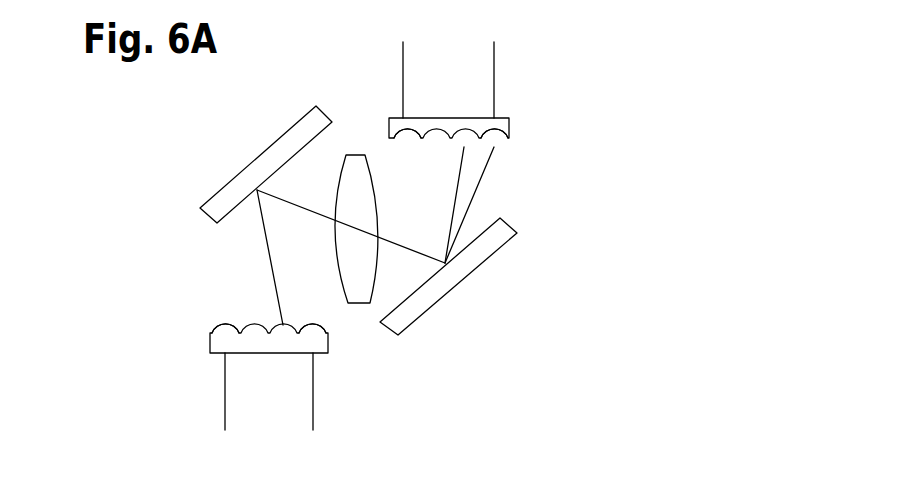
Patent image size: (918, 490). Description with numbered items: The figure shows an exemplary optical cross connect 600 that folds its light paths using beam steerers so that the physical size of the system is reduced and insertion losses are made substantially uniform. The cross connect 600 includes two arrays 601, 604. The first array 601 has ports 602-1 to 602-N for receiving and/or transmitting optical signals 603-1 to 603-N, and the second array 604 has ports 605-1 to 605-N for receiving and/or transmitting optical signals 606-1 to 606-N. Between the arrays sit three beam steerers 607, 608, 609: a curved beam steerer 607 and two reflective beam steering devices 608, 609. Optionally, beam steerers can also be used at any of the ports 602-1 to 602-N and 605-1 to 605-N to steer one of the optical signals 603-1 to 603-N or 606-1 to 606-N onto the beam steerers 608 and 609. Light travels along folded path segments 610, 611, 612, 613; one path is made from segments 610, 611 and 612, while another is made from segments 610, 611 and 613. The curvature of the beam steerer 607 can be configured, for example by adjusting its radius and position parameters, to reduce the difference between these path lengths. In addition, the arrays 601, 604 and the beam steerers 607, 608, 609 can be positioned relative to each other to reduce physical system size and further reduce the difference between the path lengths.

The cross connect 600 is at (670, 203).
The array 601 is at (204, 342).
The port 602-1 is at (223, 325).
The port 602-N is at (313, 325).
The optical signal 603-1 is at (225, 397).
The optical signal 603-N is at (313, 395).
The array 604 is at (516, 125).
The port 605-1 is at (396, 148).
The port 605-N is at (493, 150).
The optical signal 606-1 is at (403, 63).
The optical signal 606-N is at (493, 73).
The beam steerer 607 is at (357, 155).
The beam steerer 608 is at (278, 140).
The beam steerer 609 is at (485, 265).
The segment 610 is at (267, 258).
The segment 611 is at (278, 205).
The segment 612 is at (450, 228).
The segment 613 is at (468, 202).